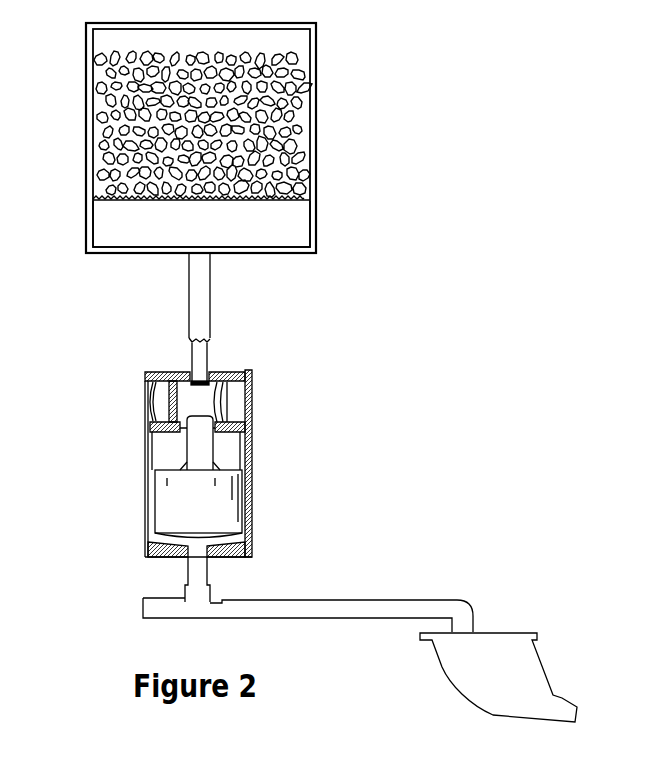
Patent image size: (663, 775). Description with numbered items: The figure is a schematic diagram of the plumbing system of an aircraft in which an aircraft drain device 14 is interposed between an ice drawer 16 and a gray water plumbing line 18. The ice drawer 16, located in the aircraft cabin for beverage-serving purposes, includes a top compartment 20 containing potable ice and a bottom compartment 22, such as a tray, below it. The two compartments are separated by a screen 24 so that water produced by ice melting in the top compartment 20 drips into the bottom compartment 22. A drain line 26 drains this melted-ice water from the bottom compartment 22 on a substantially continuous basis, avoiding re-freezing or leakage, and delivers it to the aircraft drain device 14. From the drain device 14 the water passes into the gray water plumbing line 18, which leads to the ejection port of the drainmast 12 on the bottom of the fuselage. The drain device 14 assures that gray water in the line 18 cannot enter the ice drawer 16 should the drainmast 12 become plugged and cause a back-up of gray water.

The drainmast 12 is at (470, 678).
The aircraft drain device 14 is at (263, 418).
The ice drawer 16 is at (323, 117).
The gray water plumbing line 18 is at (322, 600).
The top compartment 20 is at (272, 52).
The bottom compartment 22 is at (273, 235).
The screen 24 is at (277, 200).
The drain line 26 is at (210, 300).